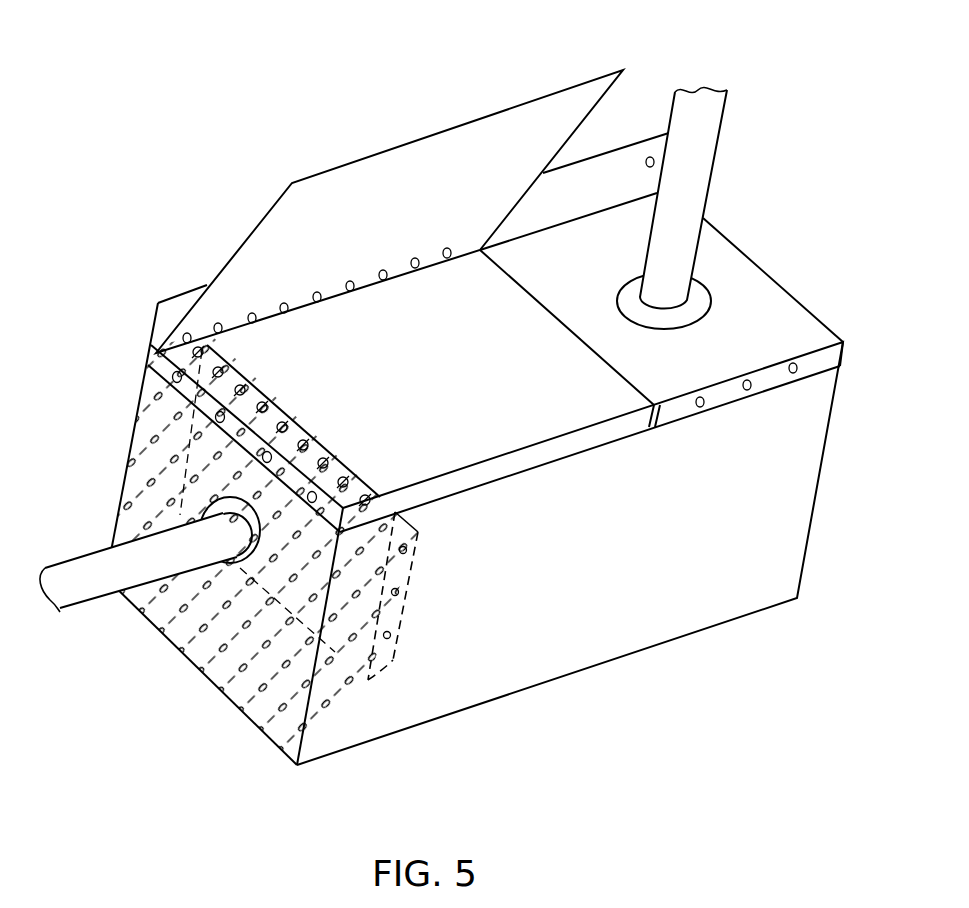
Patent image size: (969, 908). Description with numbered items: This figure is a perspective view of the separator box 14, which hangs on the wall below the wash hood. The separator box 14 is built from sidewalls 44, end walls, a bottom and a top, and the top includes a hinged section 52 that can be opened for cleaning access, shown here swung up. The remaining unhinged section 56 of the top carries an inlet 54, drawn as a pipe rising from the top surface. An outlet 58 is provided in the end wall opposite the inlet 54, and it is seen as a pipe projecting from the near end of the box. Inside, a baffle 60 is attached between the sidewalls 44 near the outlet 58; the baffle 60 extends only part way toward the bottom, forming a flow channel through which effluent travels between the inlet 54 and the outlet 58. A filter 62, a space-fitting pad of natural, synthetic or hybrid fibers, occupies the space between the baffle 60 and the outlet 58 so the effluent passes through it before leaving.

The separator box 14 is at (737, 195).
The sidewalls 44 is at (632, 142).
The hinged section 52 is at (460, 125).
The inlet 54 is at (710, 292).
The unhinged section 56 is at (805, 312).
The outlet 58 is at (232, 562).
The baffle 60 is at (404, 603).
The filter 62 is at (276, 640).